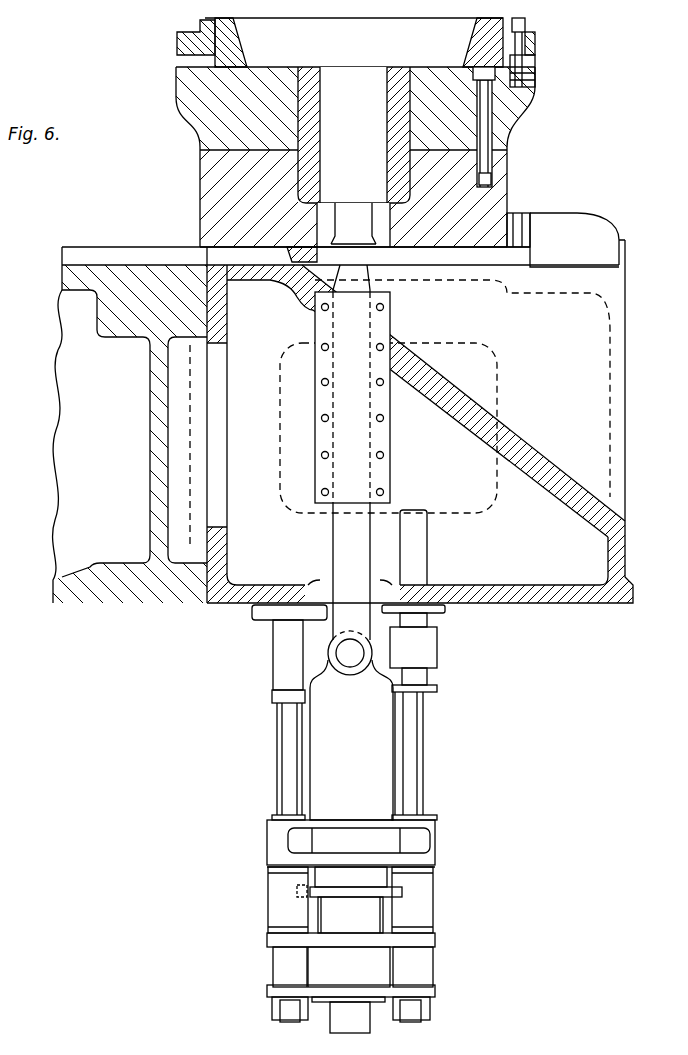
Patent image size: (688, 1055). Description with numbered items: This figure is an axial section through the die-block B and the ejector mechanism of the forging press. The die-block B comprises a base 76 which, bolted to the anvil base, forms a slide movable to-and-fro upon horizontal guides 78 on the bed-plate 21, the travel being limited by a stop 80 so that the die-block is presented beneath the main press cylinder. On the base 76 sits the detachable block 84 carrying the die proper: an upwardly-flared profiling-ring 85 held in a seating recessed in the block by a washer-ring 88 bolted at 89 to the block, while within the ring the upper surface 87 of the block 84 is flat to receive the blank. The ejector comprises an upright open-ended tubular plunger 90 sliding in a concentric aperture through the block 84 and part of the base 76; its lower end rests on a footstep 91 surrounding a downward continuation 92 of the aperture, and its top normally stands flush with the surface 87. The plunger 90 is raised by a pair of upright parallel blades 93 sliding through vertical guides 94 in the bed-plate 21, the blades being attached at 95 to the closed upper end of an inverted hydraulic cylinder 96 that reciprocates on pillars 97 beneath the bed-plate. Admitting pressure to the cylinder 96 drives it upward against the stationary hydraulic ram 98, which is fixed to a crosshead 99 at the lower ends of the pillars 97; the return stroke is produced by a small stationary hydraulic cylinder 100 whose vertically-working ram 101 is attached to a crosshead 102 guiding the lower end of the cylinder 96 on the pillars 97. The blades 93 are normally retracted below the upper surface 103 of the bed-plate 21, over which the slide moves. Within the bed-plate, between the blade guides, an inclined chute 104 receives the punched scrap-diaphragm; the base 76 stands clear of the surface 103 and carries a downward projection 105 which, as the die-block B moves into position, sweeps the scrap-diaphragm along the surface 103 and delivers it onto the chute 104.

The bed-plate 21 is at (149, 438).
The base of the die-block 76 is at (199, 194).
The horizontal guides 78 is at (97, 247).
The stop 80 is at (516, 220).
The block 84 is at (200, 110).
The profiling-ring 85 is at (242, 47).
The upper surface of the block 87 is at (436, 70).
The washer-ring 88 is at (205, 31).
The bolt 89 is at (536, 48).
The tubular plunger 90 is at (346, 80).
The footstep 91 is at (320, 193).
The downward continuation of the central aperture 92 is at (376, 222).
The ejector blades 93 is at (362, 303).
The vertical guides 94 is at (381, 438).
The blade attachment 95 is at (352, 659).
The inverted hydraulic cylinder 96 is at (351, 740).
The pillars 97 is at (277, 758).
The hydraulic ram 98 is at (351, 907).
The crosshead 99 is at (351, 990).
The small stationary hydraulic cylinder 100 is at (428, 545).
The vertically-working ram 101 is at (415, 750).
The crosshead 102 is at (418, 843).
The upper surface of the bed-plate 103 is at (453, 268).
The inclined chute 104 is at (519, 439).
The downward projection 105 is at (281, 295).
The die-block B is at (354, 9).